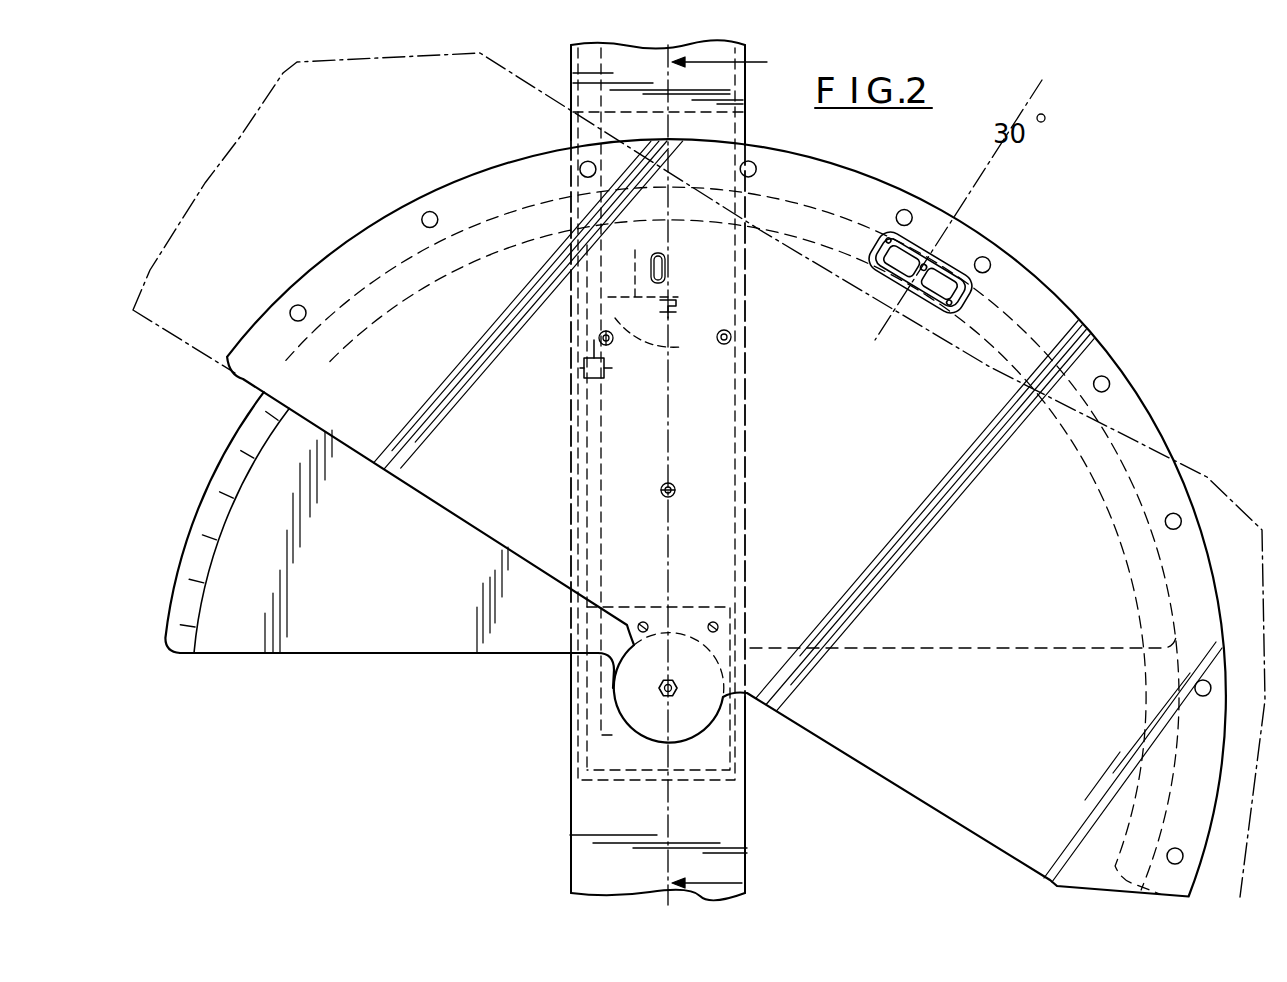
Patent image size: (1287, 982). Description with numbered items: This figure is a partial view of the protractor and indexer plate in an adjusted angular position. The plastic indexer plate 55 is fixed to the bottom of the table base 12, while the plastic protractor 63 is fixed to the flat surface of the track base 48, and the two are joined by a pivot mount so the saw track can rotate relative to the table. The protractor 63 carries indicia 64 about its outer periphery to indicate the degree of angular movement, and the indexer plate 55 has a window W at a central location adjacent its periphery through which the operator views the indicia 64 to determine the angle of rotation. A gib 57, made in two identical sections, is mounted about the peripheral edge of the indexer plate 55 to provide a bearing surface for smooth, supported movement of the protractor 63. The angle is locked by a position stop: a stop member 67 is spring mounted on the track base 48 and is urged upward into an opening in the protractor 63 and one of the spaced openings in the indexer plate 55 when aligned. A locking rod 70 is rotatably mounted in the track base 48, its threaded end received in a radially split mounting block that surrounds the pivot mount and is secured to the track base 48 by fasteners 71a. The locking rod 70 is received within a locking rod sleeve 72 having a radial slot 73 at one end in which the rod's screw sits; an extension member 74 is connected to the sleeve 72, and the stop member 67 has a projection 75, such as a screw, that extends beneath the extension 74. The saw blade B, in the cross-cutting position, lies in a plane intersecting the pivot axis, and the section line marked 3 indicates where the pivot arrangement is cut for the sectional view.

The table base 12 is at (204, 172).
The track base 48 is at (585, 852).
The indexer plate 55 is at (958, 822).
The gib 57 is at (360, 268).
The protractor 63 is at (398, 642).
The indicia 64 is at (212, 530).
The stop member 67 is at (676, 272).
The locking rod 70 is at (748, 110).
The fasteners 71a is at (673, 607).
The locking rod sleeve 72 is at (627, 349).
The radial slot 73 is at (570, 368).
The extension member 74 is at (644, 287).
The projection 75 is at (696, 413).
The section line 3- 3 is at (731, 470).
The saw blade B is at (680, 680).
The window W is at (887, 332).